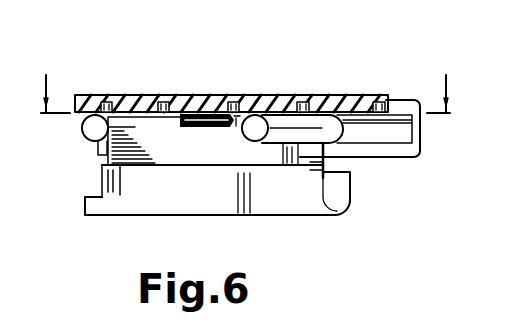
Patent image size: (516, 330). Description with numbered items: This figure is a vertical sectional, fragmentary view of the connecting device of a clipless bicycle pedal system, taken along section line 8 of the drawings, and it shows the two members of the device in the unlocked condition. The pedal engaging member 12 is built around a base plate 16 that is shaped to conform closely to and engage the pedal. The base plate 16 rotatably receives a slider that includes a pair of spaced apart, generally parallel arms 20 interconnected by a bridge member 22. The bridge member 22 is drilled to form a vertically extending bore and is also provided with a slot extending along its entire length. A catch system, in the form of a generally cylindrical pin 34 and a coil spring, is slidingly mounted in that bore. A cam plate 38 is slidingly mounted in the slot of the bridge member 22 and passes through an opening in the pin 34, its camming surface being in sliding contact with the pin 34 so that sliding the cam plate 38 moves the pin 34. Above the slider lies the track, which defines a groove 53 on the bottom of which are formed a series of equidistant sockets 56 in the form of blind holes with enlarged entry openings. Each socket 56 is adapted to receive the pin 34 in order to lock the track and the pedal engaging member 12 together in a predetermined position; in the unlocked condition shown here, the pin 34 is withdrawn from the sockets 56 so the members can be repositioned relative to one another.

The section line 8- 8 is at (246, 82).
The pedal engaging member 12 is at (105, 219).
The base plate 16 is at (290, 207).
The arms 20 is at (88, 131).
The bridge member 22 is at (215, 140).
The pin 34 is at (214, 124).
The cam plate 38 is at (325, 163).
The groove 53 is at (393, 133).
The sockets 56 is at (386, 98).